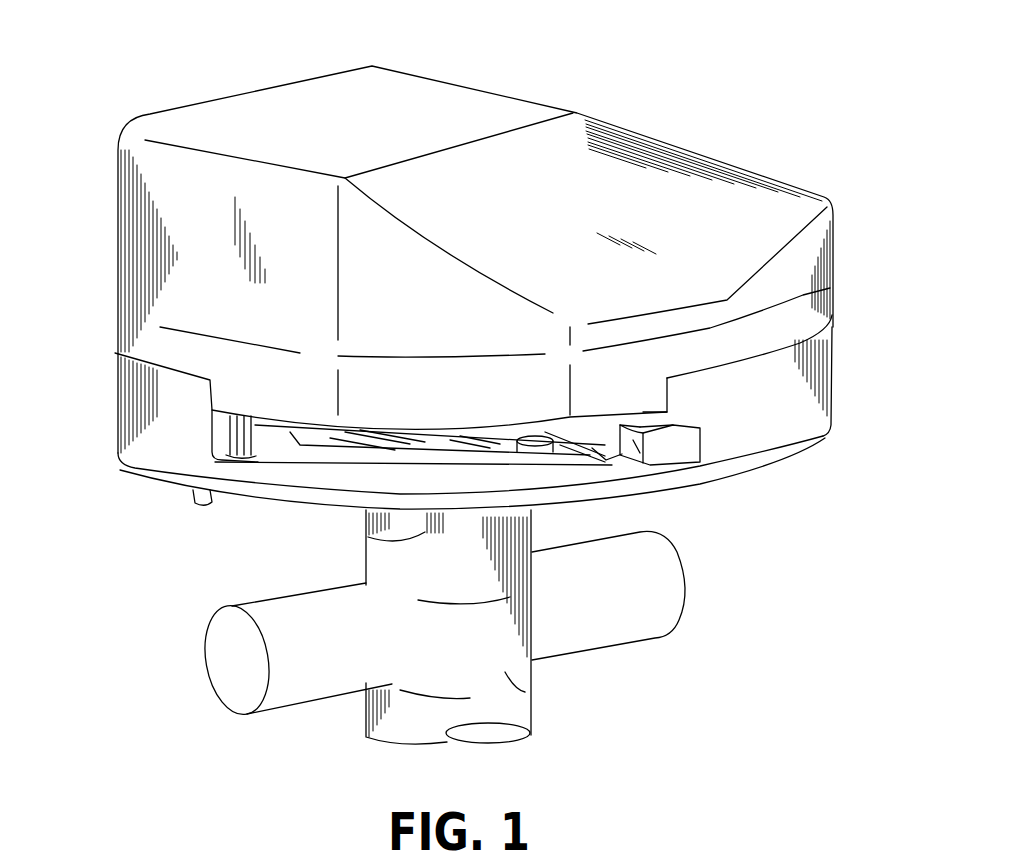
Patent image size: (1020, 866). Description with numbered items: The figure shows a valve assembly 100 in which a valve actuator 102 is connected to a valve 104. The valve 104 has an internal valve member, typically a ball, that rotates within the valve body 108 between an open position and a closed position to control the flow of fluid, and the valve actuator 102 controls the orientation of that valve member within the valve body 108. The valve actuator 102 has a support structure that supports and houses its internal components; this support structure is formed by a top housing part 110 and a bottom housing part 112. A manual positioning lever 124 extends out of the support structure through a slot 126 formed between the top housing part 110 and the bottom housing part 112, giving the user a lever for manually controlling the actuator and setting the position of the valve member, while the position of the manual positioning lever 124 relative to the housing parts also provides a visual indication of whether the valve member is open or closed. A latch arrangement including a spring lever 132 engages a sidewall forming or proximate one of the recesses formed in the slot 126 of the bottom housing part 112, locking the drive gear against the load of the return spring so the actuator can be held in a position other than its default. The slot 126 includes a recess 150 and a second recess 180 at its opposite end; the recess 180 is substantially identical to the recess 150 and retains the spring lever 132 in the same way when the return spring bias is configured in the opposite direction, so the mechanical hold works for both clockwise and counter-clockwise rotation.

The valve assembly 100 is at (748, 67).
The valve actuator 102 is at (179, 515).
The valve 104 is at (354, 579).
The valve body 108 is at (505, 672).
The top housing part 110 is at (820, 317).
The bottom housing part 112 is at (802, 400).
The manual positioning lever 124 is at (636, 440).
The slot 126 is at (278, 439).
The spring lever 132 is at (703, 465).
The recess 150 is at (221, 441).
The second recess 180 is at (605, 458).